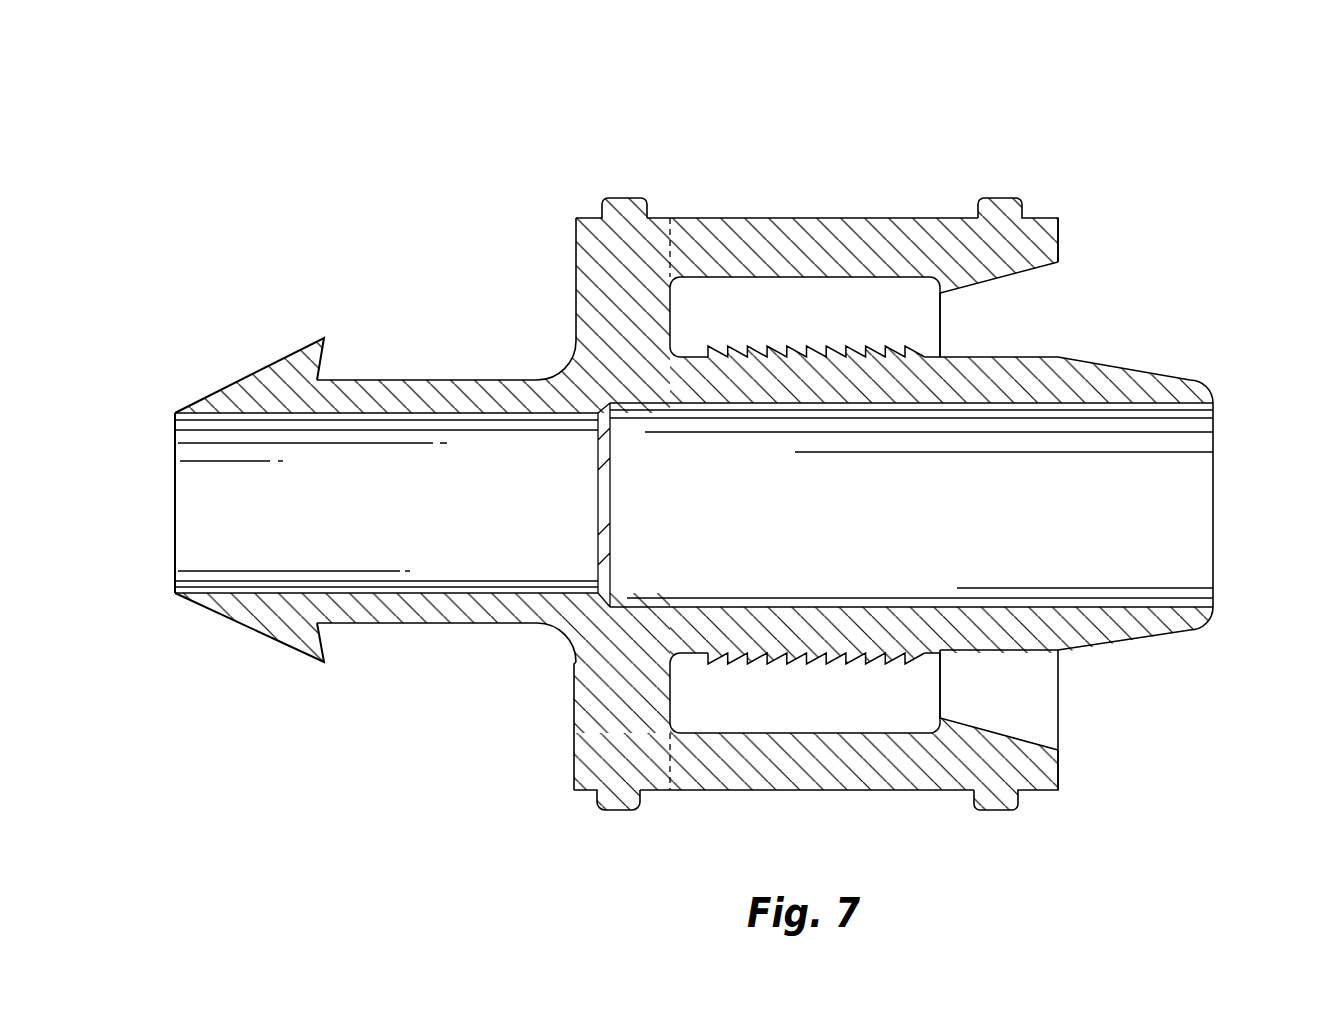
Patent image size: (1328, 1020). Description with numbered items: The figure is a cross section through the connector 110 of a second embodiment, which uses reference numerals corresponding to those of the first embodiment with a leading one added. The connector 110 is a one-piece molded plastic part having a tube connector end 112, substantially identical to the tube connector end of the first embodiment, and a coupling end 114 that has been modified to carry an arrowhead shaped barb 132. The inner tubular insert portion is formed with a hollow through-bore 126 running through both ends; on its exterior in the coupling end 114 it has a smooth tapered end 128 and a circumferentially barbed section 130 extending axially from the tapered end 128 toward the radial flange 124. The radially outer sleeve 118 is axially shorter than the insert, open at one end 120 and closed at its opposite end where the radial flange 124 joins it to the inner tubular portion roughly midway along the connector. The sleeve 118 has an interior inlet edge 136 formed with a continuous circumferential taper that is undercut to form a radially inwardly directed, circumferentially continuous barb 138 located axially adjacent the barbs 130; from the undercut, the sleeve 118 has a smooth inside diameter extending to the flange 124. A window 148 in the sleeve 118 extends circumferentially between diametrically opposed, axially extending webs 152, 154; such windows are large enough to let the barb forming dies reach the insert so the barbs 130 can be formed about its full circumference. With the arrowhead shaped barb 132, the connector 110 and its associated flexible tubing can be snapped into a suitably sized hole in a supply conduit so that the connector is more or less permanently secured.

The connector 110 is at (797, 142).
The tube connector end 112 is at (1157, 320).
The coupling end 114 is at (278, 322).
The radially outer sleeve portion 118 is at (917, 220).
The open end of sleeve 120 is at (1092, 693).
The radial flange 124 is at (573, 697).
The through-bore 126 is at (1187, 477).
The tapered end 128 is at (1165, 377).
The barbs 130 is at (790, 347).
The arrowhead shaped barb 132 is at (250, 630).
The interior inlet edge 136 is at (993, 733).
The radially inwardly directed barb 138 is at (943, 293).
The window 148 is at (708, 290).
The web 152 is at (820, 233).
The web 154 is at (750, 782).